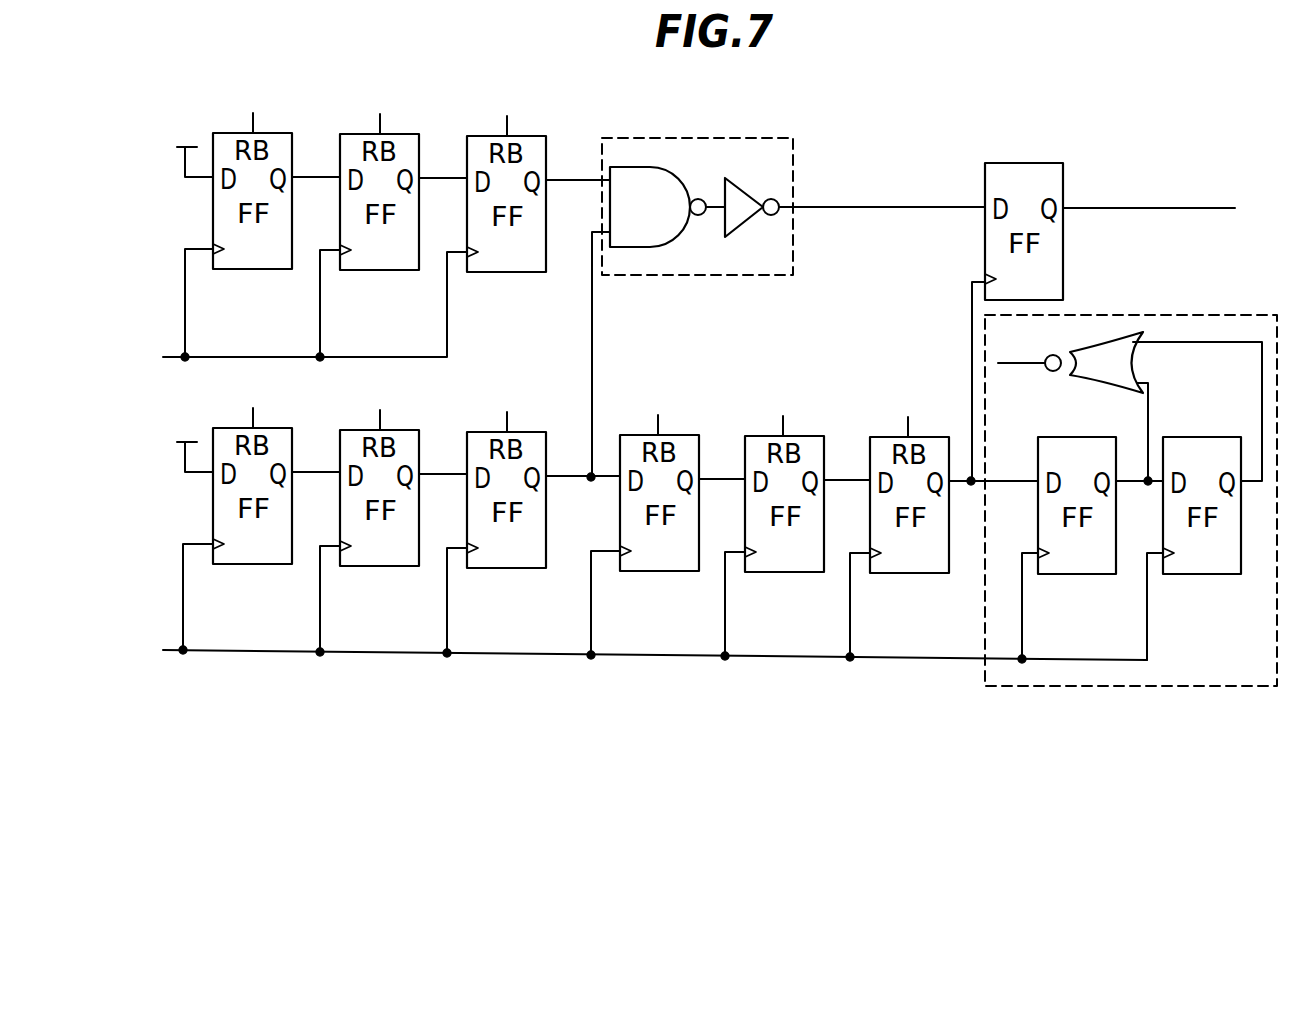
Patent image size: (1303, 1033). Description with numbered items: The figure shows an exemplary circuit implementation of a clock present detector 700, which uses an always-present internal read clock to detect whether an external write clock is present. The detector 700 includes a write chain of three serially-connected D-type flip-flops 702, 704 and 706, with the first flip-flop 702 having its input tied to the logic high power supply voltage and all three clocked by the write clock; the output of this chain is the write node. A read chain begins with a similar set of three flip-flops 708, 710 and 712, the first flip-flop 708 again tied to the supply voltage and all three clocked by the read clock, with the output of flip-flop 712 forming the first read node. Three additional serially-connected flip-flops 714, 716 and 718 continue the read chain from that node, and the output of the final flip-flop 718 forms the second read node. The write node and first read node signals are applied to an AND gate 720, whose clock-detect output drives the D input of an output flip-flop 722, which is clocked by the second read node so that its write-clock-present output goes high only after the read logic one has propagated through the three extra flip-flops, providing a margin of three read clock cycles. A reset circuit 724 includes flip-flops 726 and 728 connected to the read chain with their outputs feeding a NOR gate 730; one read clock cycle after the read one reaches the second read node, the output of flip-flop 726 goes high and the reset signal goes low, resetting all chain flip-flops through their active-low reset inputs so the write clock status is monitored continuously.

The clock present detector 700 is at (1008, 103).
The D-type flip-flop 702 is at (225, 269).
The D-type flip-flop 704 is at (352, 270).
The D-type flip-flop 706 is at (479, 272).
The flip-flop 708 is at (225, 564).
The flip-flop 710 is at (352, 566).
The flip-flop 712 is at (479, 568).
The flip-flop 714 is at (630, 571).
The flip-flop 716 is at (755, 572).
The flip-flop 718 is at (880, 573).
The AND gate 720 is at (697, 138).
The output flip-flop 722 is at (1025, 163).
The reset circuit 724 is at (1133, 517).
The flip-flop 726 is at (1048, 574).
The flip-flop 728 is at (1173, 574).
The NOR gate 730 is at (1125, 345).